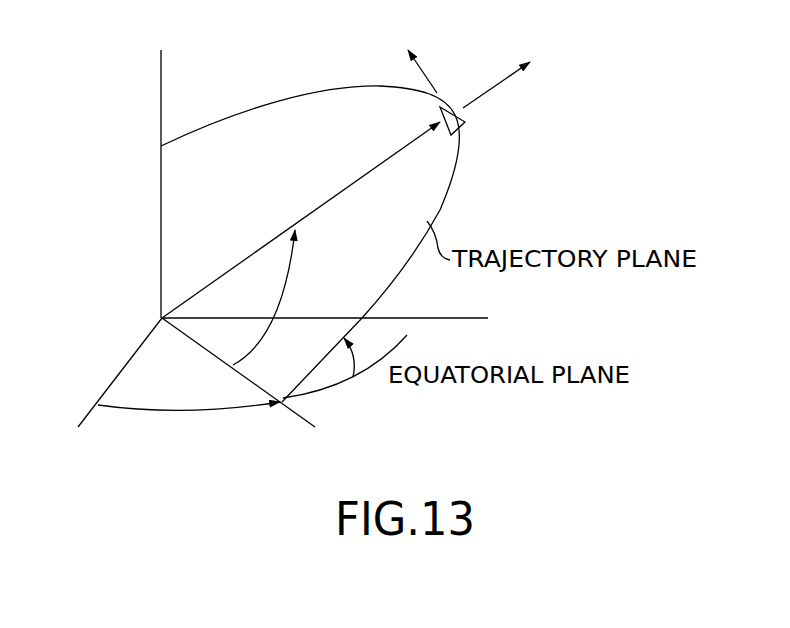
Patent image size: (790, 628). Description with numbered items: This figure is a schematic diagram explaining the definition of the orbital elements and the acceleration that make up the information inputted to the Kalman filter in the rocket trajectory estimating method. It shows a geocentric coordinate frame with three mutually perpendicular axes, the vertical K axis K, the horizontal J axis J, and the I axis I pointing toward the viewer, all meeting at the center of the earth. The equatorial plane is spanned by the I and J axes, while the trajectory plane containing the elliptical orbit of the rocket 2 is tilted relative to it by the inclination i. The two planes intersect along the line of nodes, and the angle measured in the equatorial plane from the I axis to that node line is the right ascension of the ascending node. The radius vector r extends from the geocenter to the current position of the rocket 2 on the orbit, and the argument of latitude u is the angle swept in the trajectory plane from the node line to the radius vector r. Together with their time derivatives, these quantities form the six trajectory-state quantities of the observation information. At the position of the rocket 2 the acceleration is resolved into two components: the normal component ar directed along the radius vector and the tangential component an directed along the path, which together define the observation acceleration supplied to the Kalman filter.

The rocket 2 is at (467, 120).
The K axis K is at (162, 171).
The J axis J is at (333, 320).
The I axis I is at (113, 384).
The radius vector r is at (301, 220).
The argument of latitude u is at (269, 297).
The inclination i is at (345, 366).
The tangential acceleration component an is at (415, 57).
The normal acceleration component ar is at (508, 74).